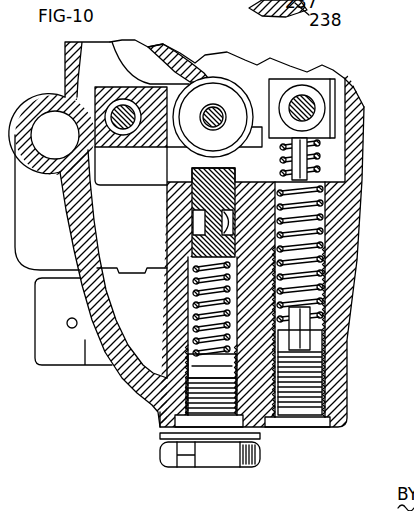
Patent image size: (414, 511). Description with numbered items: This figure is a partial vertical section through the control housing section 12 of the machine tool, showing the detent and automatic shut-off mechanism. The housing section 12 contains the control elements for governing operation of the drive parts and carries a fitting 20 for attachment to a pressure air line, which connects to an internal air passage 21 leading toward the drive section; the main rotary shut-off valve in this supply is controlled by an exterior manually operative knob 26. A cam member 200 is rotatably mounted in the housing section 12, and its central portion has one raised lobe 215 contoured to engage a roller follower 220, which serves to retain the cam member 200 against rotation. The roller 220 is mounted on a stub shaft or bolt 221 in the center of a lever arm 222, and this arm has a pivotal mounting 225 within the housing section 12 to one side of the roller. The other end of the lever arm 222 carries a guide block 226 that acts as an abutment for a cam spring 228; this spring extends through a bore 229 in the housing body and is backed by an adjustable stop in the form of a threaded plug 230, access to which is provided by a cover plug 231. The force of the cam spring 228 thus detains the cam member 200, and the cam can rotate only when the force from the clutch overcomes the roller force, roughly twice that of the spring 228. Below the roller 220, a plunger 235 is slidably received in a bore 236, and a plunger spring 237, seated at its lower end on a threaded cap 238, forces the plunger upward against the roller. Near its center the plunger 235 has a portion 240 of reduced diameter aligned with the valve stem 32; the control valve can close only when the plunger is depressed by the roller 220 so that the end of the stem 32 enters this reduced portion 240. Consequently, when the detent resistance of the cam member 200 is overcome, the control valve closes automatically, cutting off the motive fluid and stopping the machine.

The control housing section 12 is at (94, 402).
The fitting 20 is at (160, 453).
The internal air passage 21 is at (45, 127).
The manually operative knob 26 is at (55, 366).
The valve stem 32 is at (205, 228).
The cam member 200 is at (175, 50).
The raised lobe 215 is at (187, 83).
The roller follower 220 is at (192, 133).
The stub shaft or bolt 221 is at (213, 105).
The lever arm 222 is at (100, 87).
The pivotal mounting 225 is at (73, 87).
The guide block 226 is at (326, 83).
The cam spring 228 is at (320, 283).
The bore 229 is at (324, 258).
The threaded plug 230 is at (327, 351).
The cover plug 231 is at (322, 423).
The plunger 235 is at (231, 164).
The bore 236 is at (195, 232).
The plunger spring 237 is at (197, 336).
The threaded cap 238 is at (166, 418).
The portion of reduced diameter 240 is at (200, 215).